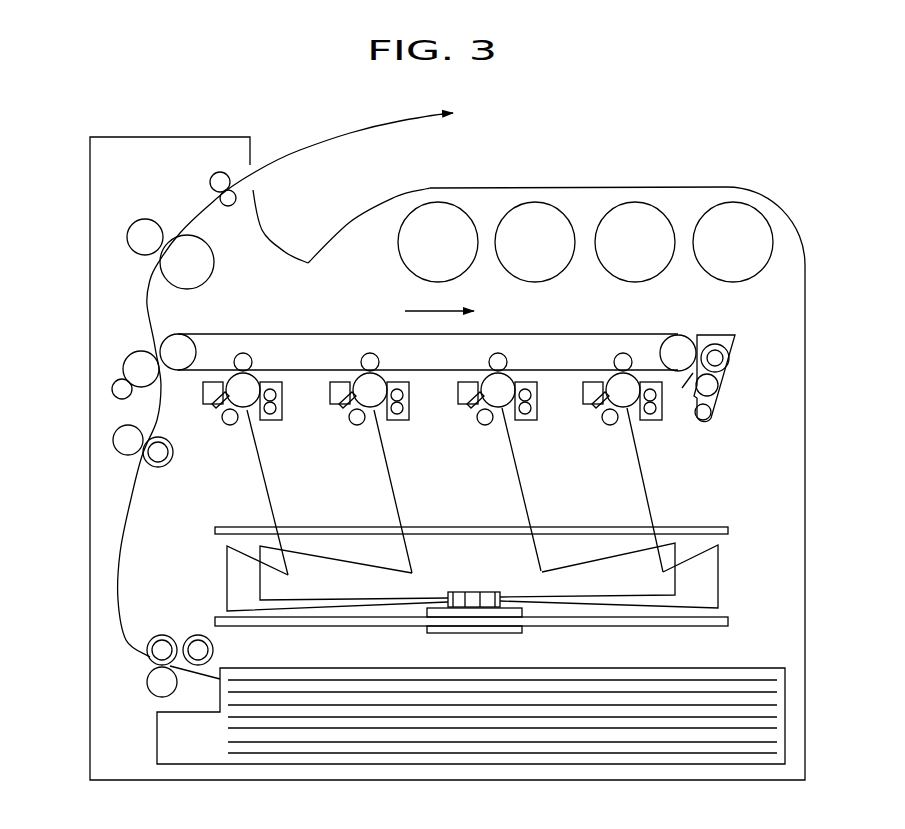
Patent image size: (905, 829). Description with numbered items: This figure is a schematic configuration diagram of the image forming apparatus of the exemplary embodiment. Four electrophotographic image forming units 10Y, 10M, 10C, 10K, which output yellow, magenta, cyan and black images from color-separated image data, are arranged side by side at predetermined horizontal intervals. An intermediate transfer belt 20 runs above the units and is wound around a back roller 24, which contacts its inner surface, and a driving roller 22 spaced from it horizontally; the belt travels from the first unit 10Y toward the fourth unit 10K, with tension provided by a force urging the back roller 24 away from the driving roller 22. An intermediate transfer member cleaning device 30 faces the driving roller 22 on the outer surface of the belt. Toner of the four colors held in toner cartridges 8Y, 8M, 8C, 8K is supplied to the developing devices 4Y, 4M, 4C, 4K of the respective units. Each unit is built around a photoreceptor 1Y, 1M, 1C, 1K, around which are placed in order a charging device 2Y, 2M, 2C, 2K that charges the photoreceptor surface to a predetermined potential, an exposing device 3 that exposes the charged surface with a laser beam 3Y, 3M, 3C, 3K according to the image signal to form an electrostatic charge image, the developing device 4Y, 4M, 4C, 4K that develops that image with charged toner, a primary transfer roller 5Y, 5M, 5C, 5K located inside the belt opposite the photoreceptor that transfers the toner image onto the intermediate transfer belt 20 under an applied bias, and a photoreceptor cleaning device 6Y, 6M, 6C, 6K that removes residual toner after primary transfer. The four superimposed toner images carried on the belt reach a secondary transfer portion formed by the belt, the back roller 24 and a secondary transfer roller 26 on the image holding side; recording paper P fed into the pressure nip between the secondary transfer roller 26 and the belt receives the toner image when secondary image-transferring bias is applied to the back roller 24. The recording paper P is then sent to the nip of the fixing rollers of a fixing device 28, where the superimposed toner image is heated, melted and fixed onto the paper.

The toner cartridge 8K is at (437, 222).
The toner cartridge 8C is at (534, 222).
The toner cartridge 8M is at (634, 222).
The toner cartridge 8Y is at (732, 222).
The fixing device 28 is at (161, 280).
The secondary transfer roller 26 is at (122, 369).
The back roller 24 is at (182, 334).
The intermediate transfer belt 20 is at (578, 333).
The driving roller 22 is at (682, 334).
The intermediate transfer member cleaning device 30 is at (737, 343).
The image forming unit 10K is at (250, 431).
The image forming unit 10C is at (377, 431).
The image forming unit 10M is at (505, 431).
The image forming unit 10Y is at (630, 409).
The photoreceptor 1K is at (250, 408).
The photoreceptor 1C is at (377, 408).
The photoreceptor 1M is at (505, 408).
The photoreceptor 1Y is at (630, 408).
The charging device 2K is at (228, 426).
The charging device 2C is at (355, 426).
The charging device 2M is at (483, 426).
The charging device 2Y is at (608, 426).
The developing device 4K is at (282, 423).
The developing device 4C is at (409, 423).
The developing device 4M is at (537, 423).
The developing device 4Y is at (662, 423).
The primary transfer roller 5K is at (252, 363).
The primary transfer roller 5C is at (379, 363).
The primary transfer roller 5M is at (507, 363).
The primary transfer roller 5Y is at (628, 357).
The photoreceptor cleaning device 6K is at (199, 402).
The photoreceptor cleaning device 6C is at (326, 402).
The photoreceptor cleaning device 6M is at (454, 402).
The photoreceptor cleaning device 6Y is at (579, 402).
The laser beam 3K is at (227, 580).
The laser beam 3C is at (315, 558).
The laser beam 3M is at (590, 562).
The laser beam 3Y is at (722, 570).
The exposing device 3 is at (524, 632).
The recording paper P is at (763, 722).